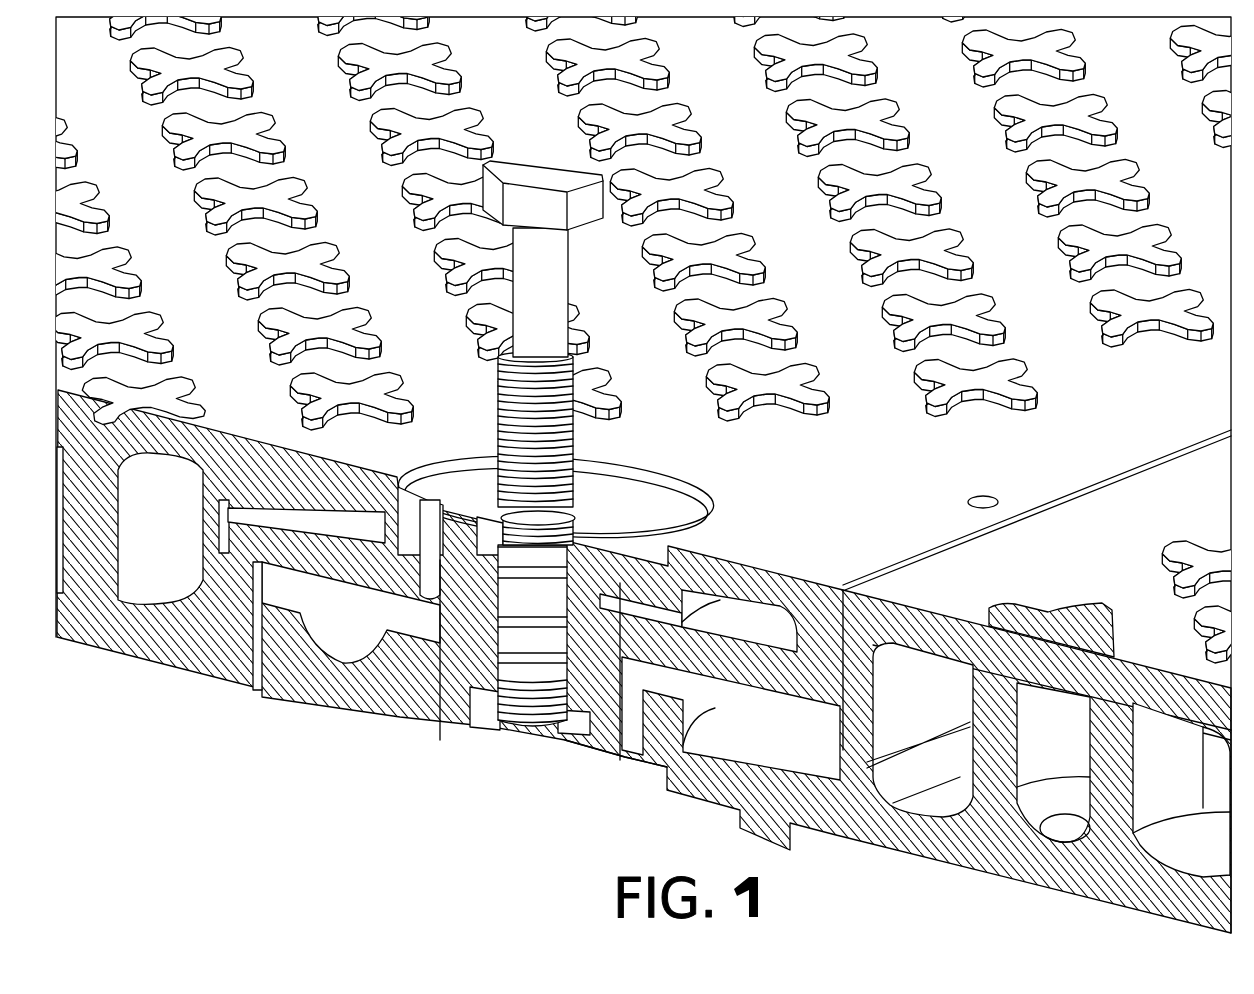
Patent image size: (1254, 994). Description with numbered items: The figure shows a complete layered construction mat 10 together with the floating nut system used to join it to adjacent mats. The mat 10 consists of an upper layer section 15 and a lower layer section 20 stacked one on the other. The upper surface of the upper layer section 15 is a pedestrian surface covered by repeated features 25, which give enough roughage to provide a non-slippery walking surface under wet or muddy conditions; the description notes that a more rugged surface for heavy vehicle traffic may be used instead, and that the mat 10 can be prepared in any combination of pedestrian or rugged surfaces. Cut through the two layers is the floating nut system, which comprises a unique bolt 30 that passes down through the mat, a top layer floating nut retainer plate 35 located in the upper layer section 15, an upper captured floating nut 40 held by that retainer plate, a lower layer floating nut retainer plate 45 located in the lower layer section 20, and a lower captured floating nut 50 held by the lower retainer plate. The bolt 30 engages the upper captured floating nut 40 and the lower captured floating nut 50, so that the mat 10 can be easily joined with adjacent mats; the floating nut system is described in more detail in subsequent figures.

The mat 10 is at (208, 777).
The upper layer section 15 is at (325, 470).
The lower layer section 20 is at (170, 650).
The repeated features 25 is at (930, 410).
The bolt 30 is at (550, 315).
The top layer floating nut retainer plate 35 is at (605, 500).
The upper captured floating nut 40 is at (590, 550).
The lower layer floating nut retainer plate 45 is at (590, 745).
The lower captured floating nut 50 is at (485, 705).